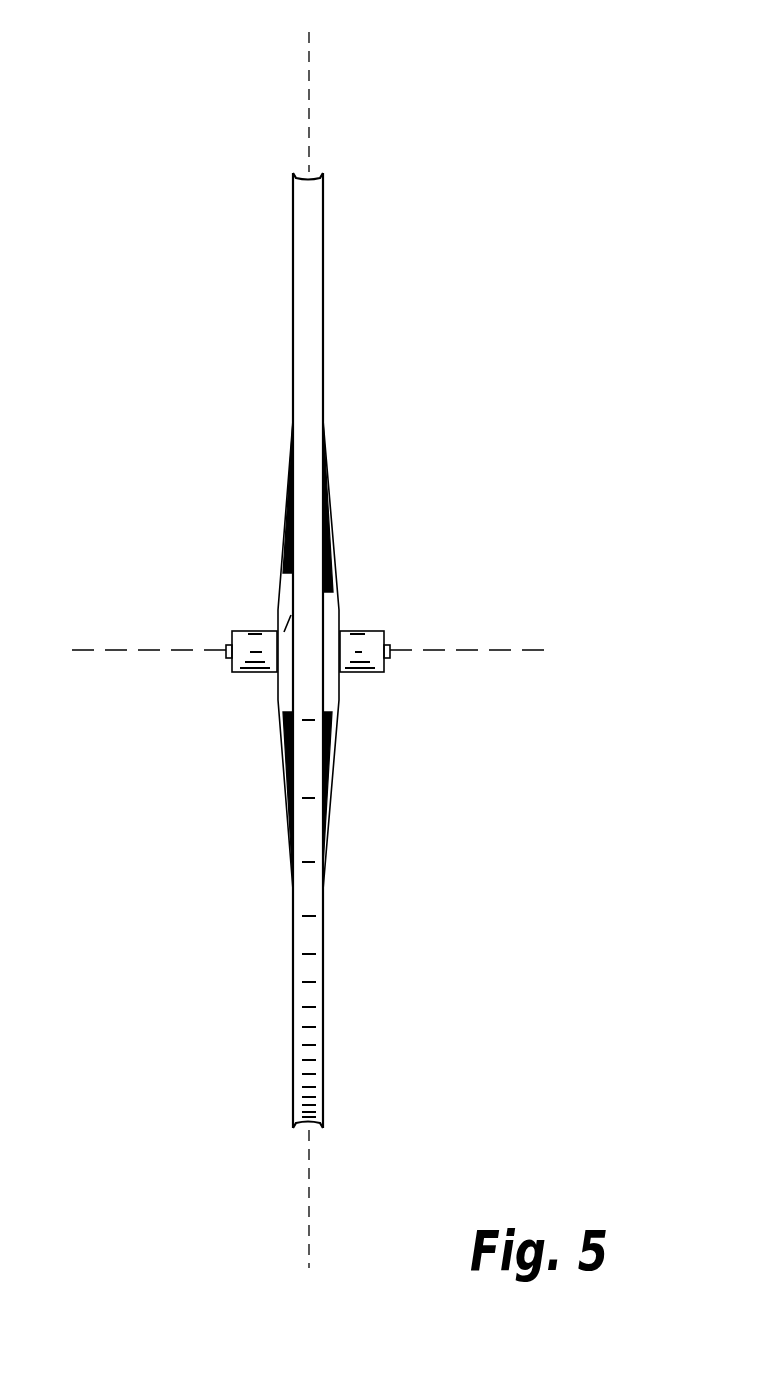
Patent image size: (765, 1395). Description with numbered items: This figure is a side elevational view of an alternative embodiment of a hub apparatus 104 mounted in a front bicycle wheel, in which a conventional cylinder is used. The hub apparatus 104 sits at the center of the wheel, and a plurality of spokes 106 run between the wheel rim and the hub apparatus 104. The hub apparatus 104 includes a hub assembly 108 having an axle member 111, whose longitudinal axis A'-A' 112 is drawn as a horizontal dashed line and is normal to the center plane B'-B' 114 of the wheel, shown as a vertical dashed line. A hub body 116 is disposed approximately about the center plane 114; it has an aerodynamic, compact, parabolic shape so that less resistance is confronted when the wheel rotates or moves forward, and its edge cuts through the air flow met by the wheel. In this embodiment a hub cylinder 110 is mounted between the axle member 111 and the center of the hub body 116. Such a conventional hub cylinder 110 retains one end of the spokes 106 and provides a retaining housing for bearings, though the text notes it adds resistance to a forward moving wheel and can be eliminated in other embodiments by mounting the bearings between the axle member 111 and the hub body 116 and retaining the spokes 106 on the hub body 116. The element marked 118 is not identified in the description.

The hub apparatus 104 is at (282, 695).
The spokes 106 is at (327, 497).
The hub assembly 108 is at (365, 678).
The hub cylinder 110 is at (368, 642).
The axle member 111 is at (226, 645).
The longitudinal axis A'-A' 112 is at (153, 652).
The center plane B'-B' 114 is at (310, 112).
The hub body 116 is at (330, 617).
The left housing 118 is at (273, 672).